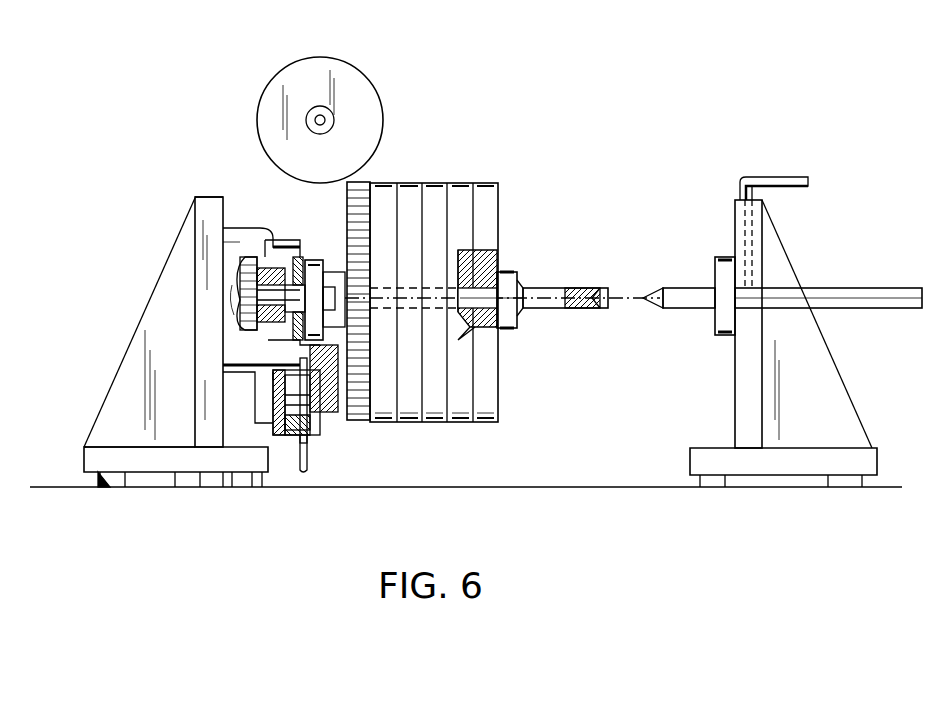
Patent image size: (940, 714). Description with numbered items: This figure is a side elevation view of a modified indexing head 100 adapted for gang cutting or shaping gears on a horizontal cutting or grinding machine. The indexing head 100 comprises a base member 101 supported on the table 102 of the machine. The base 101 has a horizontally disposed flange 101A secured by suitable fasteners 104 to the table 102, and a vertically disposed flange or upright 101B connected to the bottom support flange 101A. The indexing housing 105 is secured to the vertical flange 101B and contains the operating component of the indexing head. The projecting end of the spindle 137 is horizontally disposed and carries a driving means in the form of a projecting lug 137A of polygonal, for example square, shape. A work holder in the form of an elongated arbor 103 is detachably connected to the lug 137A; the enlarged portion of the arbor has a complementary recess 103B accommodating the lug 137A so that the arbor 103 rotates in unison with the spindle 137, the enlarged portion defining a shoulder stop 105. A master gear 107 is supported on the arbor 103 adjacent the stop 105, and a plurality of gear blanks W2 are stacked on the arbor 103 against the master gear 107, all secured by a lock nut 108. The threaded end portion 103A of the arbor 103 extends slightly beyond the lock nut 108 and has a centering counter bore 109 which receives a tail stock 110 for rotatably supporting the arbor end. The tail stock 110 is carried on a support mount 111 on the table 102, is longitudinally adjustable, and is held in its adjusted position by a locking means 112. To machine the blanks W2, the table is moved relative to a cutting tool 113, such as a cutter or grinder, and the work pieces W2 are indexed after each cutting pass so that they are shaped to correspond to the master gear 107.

The indexing head 100 is at (182, 160).
The base member 101 is at (222, 472).
The horizontally disposed flange 101A is at (162, 472).
The vertically disposed flange 101B is at (211, 198).
The table 102 is at (480, 487).
The arbor 103 is at (472, 300).
The threaded end portion 103A is at (545, 309).
The complementary recess 103B is at (330, 428).
The fasteners 104 is at (97, 483).
The indexing housing 105 is at (247, 232).
The master gear 107 is at (352, 185).
The lock nut 108 is at (500, 276).
The centering counter bore 109 is at (595, 290).
The tail stock 110 is at (660, 290).
The support mount 111 is at (782, 230).
The locking means 112 is at (764, 176).
The cutting tool 113 is at (360, 85).
The spindle 137 is at (310, 258).
The projecting lug 137A is at (327, 260).
The work piece W2 is at (465, 183).